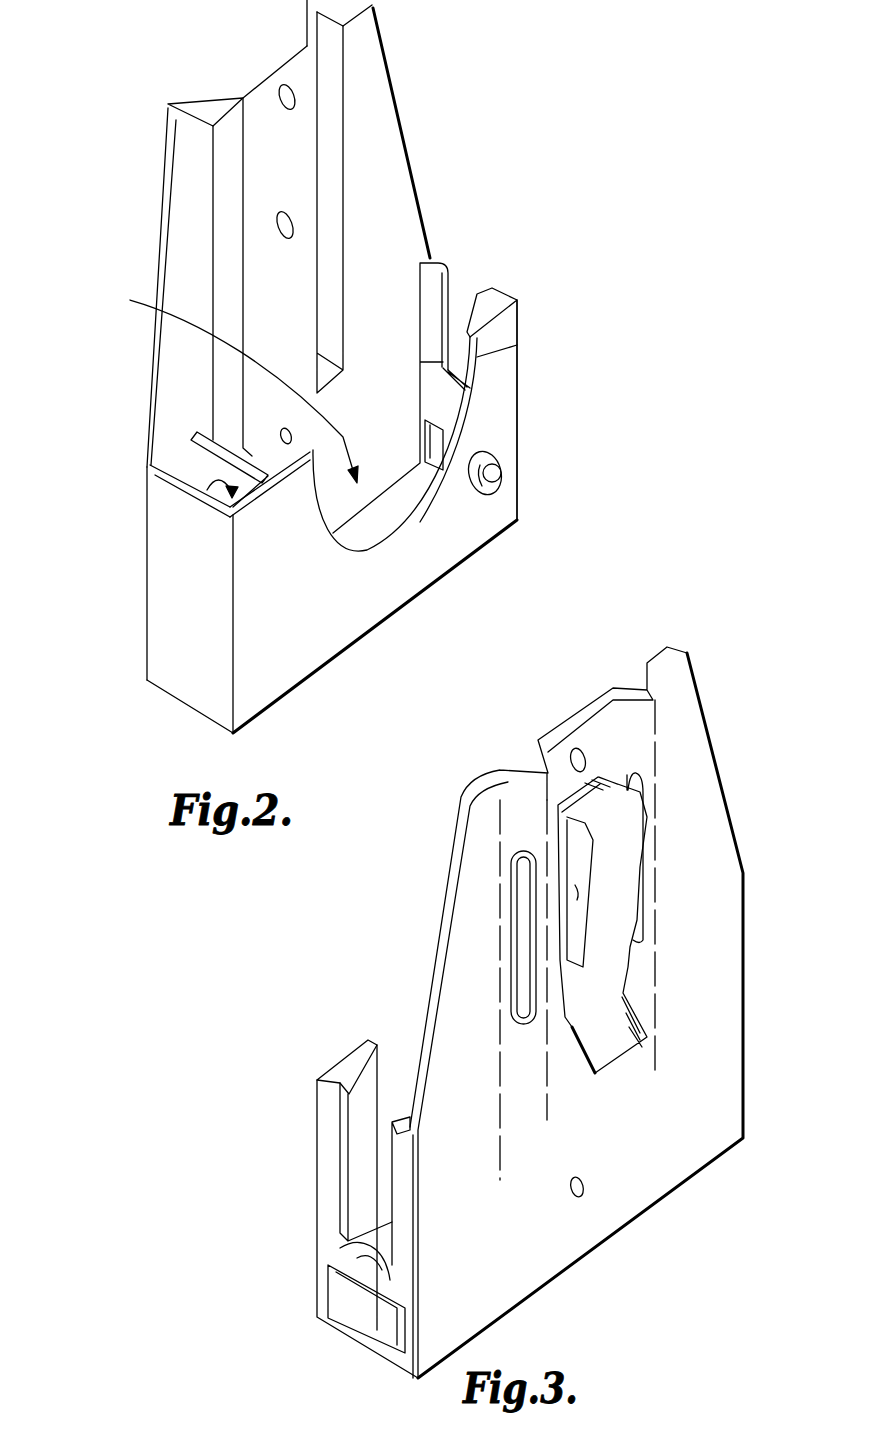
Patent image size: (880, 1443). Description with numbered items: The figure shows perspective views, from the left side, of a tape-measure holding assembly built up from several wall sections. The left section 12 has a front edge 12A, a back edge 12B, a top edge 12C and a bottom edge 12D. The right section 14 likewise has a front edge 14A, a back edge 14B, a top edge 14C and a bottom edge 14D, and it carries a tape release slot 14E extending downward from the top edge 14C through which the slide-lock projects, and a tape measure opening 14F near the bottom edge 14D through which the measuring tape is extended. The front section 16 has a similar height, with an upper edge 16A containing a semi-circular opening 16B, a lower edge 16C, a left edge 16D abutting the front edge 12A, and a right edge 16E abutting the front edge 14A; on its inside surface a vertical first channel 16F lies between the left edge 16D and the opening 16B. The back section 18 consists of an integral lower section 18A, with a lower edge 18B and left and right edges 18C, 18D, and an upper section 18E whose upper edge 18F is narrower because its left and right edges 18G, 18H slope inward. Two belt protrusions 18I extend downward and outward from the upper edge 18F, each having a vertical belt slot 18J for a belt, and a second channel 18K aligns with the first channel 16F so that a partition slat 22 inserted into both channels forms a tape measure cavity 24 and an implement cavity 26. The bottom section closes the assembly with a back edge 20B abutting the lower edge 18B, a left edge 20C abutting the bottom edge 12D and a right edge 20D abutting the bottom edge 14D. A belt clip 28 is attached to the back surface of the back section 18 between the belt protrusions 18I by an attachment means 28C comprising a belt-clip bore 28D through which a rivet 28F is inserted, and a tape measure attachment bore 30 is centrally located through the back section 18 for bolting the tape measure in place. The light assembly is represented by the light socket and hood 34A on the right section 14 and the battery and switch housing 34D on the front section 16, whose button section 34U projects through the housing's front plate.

In FIG. 2, the left section 12 is at (190, 684).
In FIG. 2, the front edge 12A is at (237, 665).
In FIG. 2, the back edge 12B is at (147, 673).
In FIG. 2, the top edge 12C is at (187, 488).
In FIG. 2, the bottom edge 12D is at (225, 735).
In FIG. 3, the right section 14 is at (332, 1162).
In FIG. 2, the front edge 14A is at (515, 372).
In FIG. 2, the back edge 14B is at (477, 357).
In FIG. 3, the top edge 14C is at (322, 1080).
In FIG. 3, the bottom edge 14D is at (352, 1343).
In FIG. 3, the tape release slot 14E is at (360, 1202).
In FIG. 3, the tape measure opening 14F is at (360, 1308).
In FIG. 2, the front section 16 is at (442, 558).
In FIG. 2, the upper edge 16A is at (515, 298).
In FIG. 3, the upper edge 16A is at (350, 1055).
In FIG. 2, the opening 16B is at (477, 413).
In FIG. 2, the lower edge 16C is at (390, 622).
In FIG. 2, the left edge 16D is at (335, 580).
In FIG. 2, the right edge 16E is at (540, 370).
In FIG. 2, the first channel 16F is at (152, 490).
In FIG. 3, the back section 18 is at (590, 1228).
In FIG. 2, the lower section 18A is at (427, 253).
In FIG. 3, the lower section 18A is at (720, 985).
In FIG. 2, the lower edge 18B is at (497, 519).
In FIG. 3, the lower edge 18B is at (563, 1280).
In FIG. 2, the left edge 18C is at (93, 697).
In FIG. 3, the left edge 18C is at (743, 1040).
In FIG. 2, the right edge 18D is at (558, 329).
In FIG. 3, the right edge 18D is at (492, 1320).
In FIG. 2, the upper section 18E is at (375, 132).
In FIG. 3, the upper section 18E is at (688, 760).
In FIG. 2, the upper edge 18F is at (257, 80).
In FIG. 3, the upper edge 18F is at (577, 718).
In FIG. 3, the left edge 18G is at (703, 720).
In FIG. 3, the right edge 18H is at (433, 1013).
In FIG. 2, the belt protrusions 18I is at (173, 127).
In FIG. 3, the belt protrusions 18I is at (630, 710).
In FIG. 3, the belt slot 18J is at (633, 797).
In FIG. 2, the second channel 18K is at (197, 436).
In FIG. 2, the back edge 20B is at (436, 613).
In FIG. 3, the back edge 20B is at (580, 1258).
In FIG. 2, the left edge 20C is at (201, 762).
In FIG. 3, the right edge 20D is at (274, 1363).
In FIG. 2, the partition slat 22 is at (207, 457).
In FIG. 2, the tape measure cavity 24 is at (227, 378).
In FIG. 2, the implement cavity 26 is at (207, 478).
In FIG. 3, the belt clip 28 is at (697, 888).
In FIG. 3, the attachment means 28C is at (577, 893).
In FIG. 2, the belt-clip bore 28D is at (292, 104).
In FIG. 3, the belt-clip bore 28D is at (578, 760).
In FIG. 3, the rivet 28F is at (480, 905).
In FIG. 2, the tape measure attachment bore 30 is at (281, 433).
In FIG. 3, the tape measure attachment bore 30 is at (600, 1190).
In FIG. 3, the light socket and hood 34A is at (343, 1245).
In FIG. 2, the battery and switch housing 34D is at (505, 460).
In FIG. 2, the button section 34U is at (510, 478).